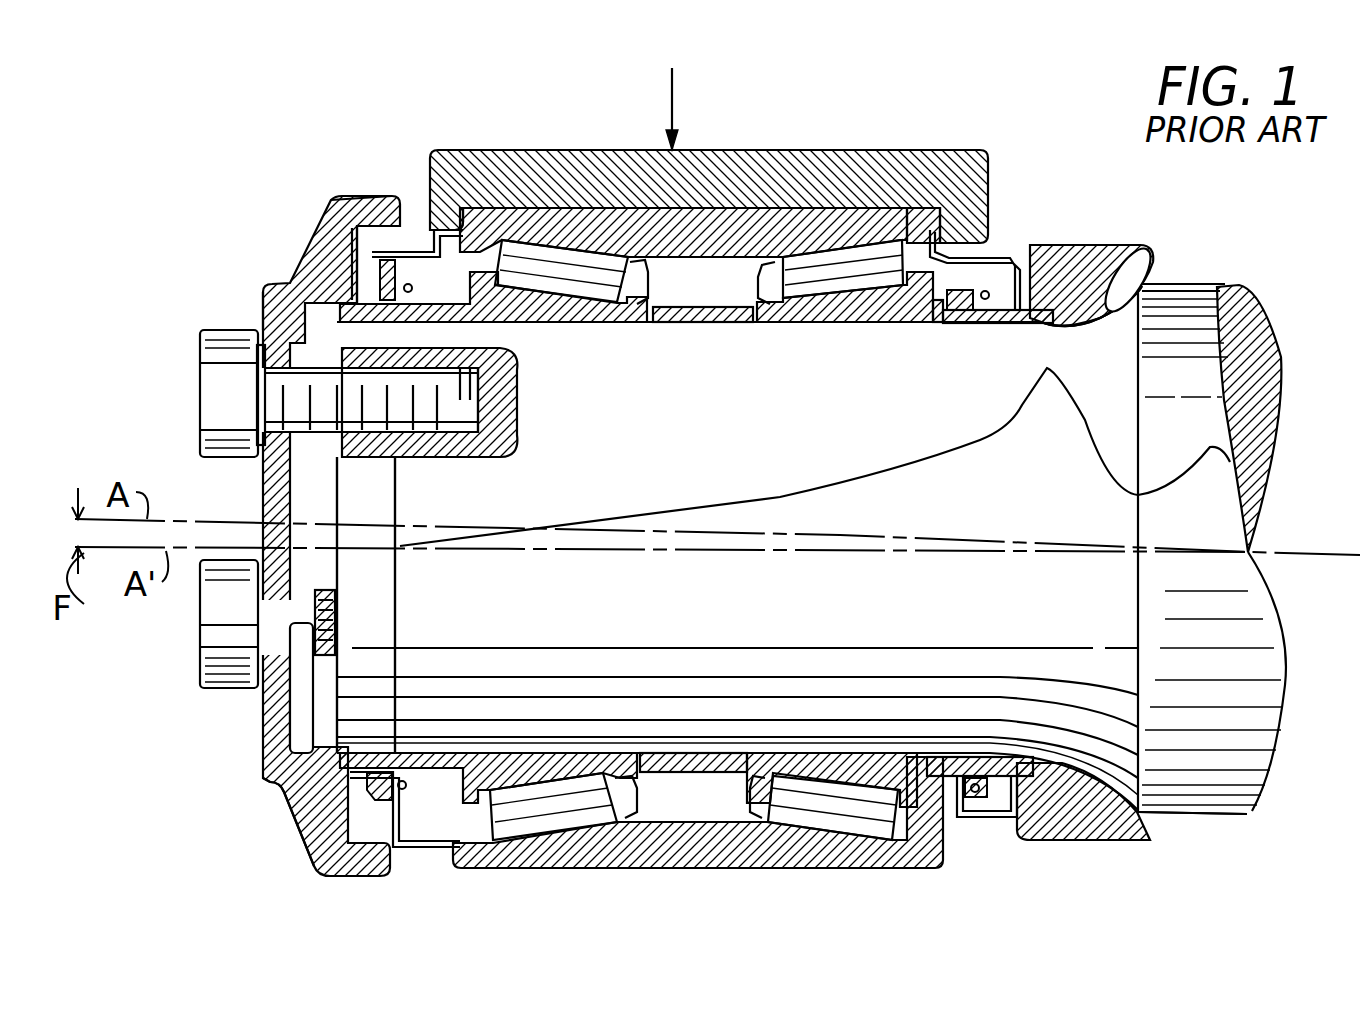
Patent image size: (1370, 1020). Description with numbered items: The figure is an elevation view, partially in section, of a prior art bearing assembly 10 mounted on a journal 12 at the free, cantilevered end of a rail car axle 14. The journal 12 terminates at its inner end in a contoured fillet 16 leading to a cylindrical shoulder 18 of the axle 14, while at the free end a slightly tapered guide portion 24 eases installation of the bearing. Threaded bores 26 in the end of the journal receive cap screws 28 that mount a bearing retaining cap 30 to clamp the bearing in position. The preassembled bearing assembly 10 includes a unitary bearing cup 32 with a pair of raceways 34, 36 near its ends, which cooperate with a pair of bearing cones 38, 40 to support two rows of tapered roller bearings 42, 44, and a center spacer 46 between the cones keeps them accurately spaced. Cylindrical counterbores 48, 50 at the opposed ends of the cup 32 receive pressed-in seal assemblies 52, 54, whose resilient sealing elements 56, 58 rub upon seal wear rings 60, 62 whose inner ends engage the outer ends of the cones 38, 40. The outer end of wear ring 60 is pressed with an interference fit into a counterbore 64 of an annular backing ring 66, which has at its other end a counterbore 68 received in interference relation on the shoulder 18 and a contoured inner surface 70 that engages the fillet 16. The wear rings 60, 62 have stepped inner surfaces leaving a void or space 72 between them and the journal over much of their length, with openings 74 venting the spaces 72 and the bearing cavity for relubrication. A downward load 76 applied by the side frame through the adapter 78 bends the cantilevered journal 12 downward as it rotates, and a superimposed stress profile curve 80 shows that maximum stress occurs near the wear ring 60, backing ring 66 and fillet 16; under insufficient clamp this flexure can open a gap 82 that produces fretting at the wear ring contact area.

The bearing assembly 10 is at (1044, 194).
The journal 12 is at (697, 606).
The axle 14 is at (1284, 310).
The fillet 16 is at (1150, 252).
The shoulder 18 is at (1237, 292).
The guide portion 24 is at (365, 612).
The threaded bores 26 is at (482, 437).
The cap screws 28 is at (215, 345).
The bearing retaining cap 30 is at (333, 200).
The bearing cup 32 is at (760, 208).
The raceway 34 is at (838, 244).
The raceway 36 is at (553, 208).
The bearing cone 38 is at (888, 310).
The bearing cone 40 is at (513, 320).
The tapered roller bearings 42 is at (822, 272).
The tapered roller bearings 44 is at (590, 292).
The center spacer 46 is at (690, 322).
The cylindrical counterbore 48 is at (947, 208).
The cylindrical counterbore 50 is at (478, 208).
The seal assembly 52 is at (1010, 284).
The seal assembly 54 is at (420, 250).
The resilient sealing element 56 is at (1045, 262).
The resilient sealing element 58 is at (325, 212).
The seal wear ring 60 is at (1020, 320).
The seal wear ring 62 is at (244, 285).
The counterbore 64 is at (1055, 326).
The backing ring 66 is at (1122, 255).
The counterbore 68 is at (1178, 290).
The contoured inner surface 70 is at (1165, 815).
The space 72 is at (320, 800).
The openings 74 is at (958, 320).
The load 76 is at (680, 72).
The adapter 78 is at (898, 175).
The stress profile curve 80 is at (858, 472).
The gap 82 is at (936, 328).